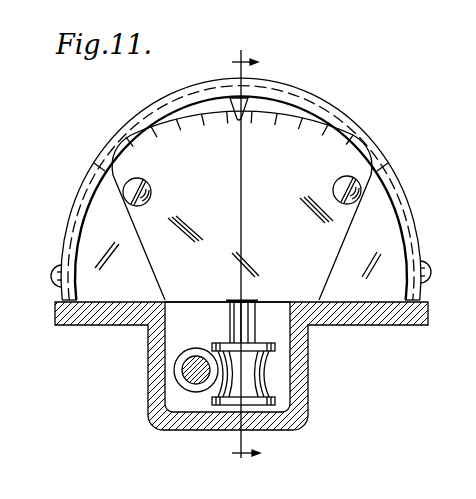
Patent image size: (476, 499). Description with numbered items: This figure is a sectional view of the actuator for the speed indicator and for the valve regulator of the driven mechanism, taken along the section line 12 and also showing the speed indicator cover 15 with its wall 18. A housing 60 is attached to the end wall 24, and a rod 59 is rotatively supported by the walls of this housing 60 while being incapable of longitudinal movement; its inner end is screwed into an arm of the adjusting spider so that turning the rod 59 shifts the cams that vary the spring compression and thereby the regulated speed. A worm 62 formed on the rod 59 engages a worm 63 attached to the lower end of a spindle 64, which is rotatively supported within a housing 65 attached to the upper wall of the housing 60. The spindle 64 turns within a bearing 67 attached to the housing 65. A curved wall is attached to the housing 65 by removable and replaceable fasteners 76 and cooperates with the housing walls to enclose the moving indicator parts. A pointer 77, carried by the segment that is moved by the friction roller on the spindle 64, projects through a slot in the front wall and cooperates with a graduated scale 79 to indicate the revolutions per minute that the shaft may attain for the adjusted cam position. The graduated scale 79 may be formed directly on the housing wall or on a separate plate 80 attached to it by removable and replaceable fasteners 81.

The section line 12 is at (246, 259).
The dome cover 15 is at (350, 116).
The cover wall 18 is at (353, 142).
The end wall 24 is at (78, 325).
The rod 59 is at (184, 371).
The housing 60 is at (309, 339).
The worm 62 is at (178, 389).
The worm 63 is at (268, 378).
The spindle 64 is at (231, 324).
The housing 65 is at (402, 248).
The bearing 67 is at (227, 303).
The fasteners 76 is at (53, 283).
The pointer 77 is at (248, 100).
The graduated scale 79 is at (270, 140).
The plate 80 is at (347, 240).
The fasteners 81 is at (152, 194).